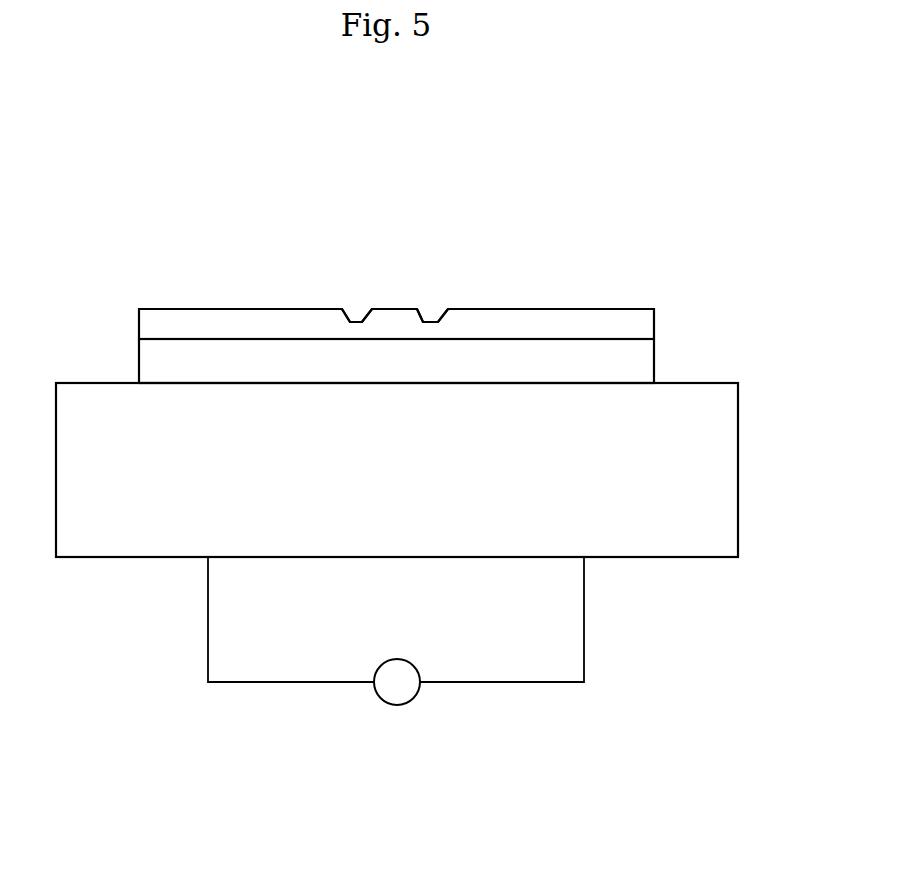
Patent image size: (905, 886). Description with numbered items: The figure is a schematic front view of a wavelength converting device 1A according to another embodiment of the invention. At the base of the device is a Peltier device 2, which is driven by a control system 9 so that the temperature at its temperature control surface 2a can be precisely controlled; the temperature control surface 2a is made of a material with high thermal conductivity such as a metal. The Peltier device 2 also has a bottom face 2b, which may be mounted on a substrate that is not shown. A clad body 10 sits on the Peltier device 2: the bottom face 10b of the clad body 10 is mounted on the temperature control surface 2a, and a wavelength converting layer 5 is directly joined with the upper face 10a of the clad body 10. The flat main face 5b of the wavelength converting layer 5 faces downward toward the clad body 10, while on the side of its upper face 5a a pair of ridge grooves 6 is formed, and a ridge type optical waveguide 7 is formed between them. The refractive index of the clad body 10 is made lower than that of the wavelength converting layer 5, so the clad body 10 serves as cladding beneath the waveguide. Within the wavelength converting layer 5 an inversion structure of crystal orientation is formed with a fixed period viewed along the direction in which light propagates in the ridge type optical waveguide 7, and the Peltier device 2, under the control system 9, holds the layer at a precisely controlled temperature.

The wavelength converting device 1A is at (699, 233).
The Peltier device 2 is at (739, 430).
The temperature control surface 2a is at (686, 382).
The bottom face 2b is at (655, 559).
The wavelength converting layer 5 is at (574, 330).
The upper face 5a is at (530, 308).
The main face 5b is at (519, 342).
The ridge groove 6 is at (362, 320).
The ridge type optical waveguide 7 is at (400, 308).
The control system 9 is at (408, 688).
The clad body 10 is at (637, 363).
The upper face 10a is at (614, 337).
The bottom face 10b is at (627, 386).